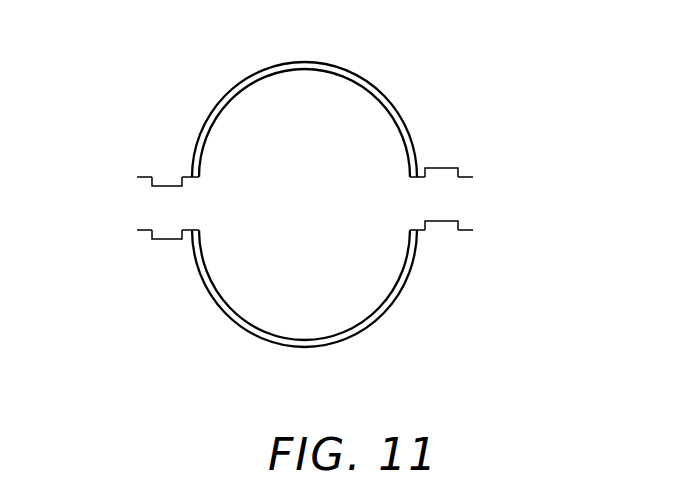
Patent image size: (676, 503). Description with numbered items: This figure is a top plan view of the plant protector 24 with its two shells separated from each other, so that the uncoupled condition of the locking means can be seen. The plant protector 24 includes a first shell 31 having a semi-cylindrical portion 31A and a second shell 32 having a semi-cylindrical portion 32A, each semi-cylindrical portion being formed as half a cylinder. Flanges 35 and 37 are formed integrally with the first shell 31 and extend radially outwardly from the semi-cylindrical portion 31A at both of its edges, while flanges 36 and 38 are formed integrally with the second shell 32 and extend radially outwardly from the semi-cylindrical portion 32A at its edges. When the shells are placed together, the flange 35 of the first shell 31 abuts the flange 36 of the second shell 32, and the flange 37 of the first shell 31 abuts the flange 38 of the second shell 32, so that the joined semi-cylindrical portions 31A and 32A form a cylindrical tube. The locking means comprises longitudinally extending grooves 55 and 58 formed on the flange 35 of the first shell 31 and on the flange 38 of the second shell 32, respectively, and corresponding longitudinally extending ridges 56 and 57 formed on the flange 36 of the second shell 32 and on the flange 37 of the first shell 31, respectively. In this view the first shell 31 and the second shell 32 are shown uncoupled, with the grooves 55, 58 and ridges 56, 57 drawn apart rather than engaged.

The plant protector 24 is at (313, 208).
The first shell 31 is at (312, 93).
The semi-cylindrical portion 31A is at (258, 72).
The second shell 32 is at (317, 319).
The semi-cylindrical portion 32A is at (353, 338).
The flange 35 is at (120, 166).
The flange 36 is at (136, 286).
The flange 37 is at (497, 132).
The flange 38 is at (492, 250).
The groove 55 is at (155, 189).
The ridge 56 is at (169, 241).
The ridge 57 is at (452, 163).
The groove 58 is at (446, 226).